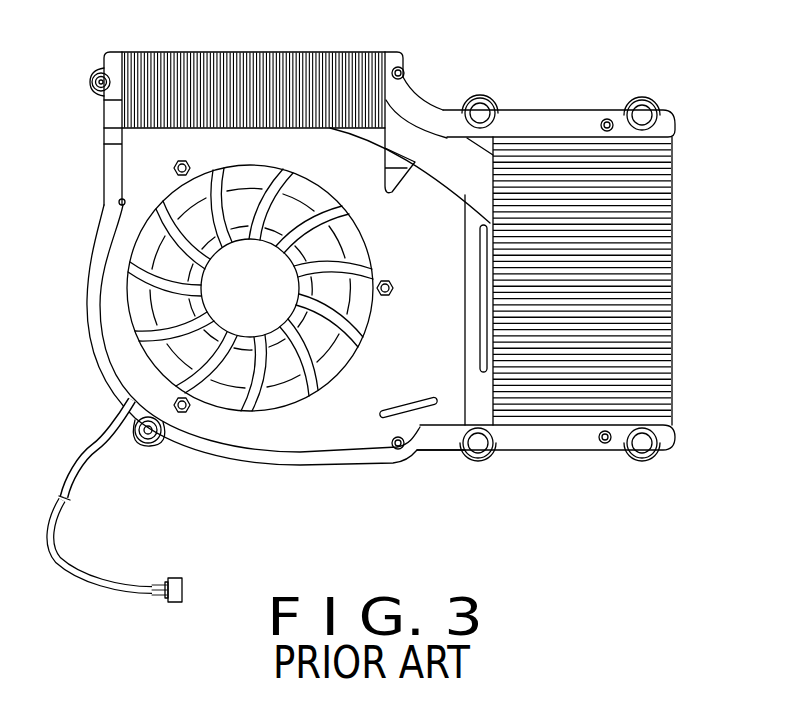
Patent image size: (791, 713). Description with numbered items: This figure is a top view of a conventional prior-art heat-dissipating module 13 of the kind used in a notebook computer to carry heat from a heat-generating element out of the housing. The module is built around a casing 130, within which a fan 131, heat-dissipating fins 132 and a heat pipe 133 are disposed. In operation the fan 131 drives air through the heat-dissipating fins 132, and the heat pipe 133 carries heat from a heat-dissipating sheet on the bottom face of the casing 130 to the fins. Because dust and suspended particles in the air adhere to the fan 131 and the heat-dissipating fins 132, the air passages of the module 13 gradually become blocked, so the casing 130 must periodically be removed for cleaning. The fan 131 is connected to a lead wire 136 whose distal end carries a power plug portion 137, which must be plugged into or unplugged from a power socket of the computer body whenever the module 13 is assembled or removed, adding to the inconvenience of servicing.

The heat-dissipating module 13 is at (418, 263).
The casing 130 is at (440, 343).
The fan 131 is at (303, 217).
The heat-dissipating fins 132 is at (140, 78).
The heat pipe 133 is at (425, 153).
The lead wire 136 is at (100, 580).
The power plug portion 137 is at (182, 593).